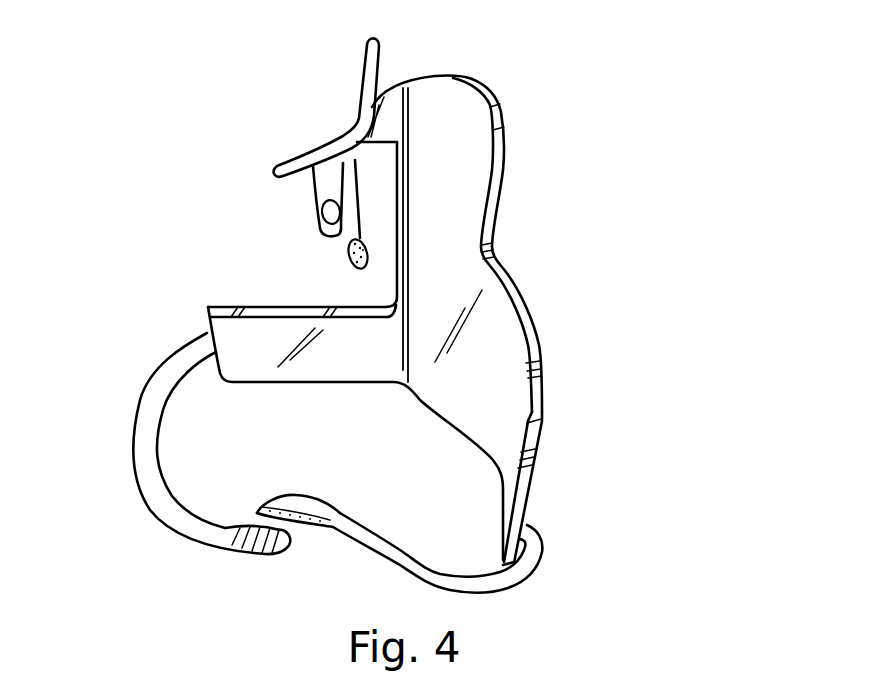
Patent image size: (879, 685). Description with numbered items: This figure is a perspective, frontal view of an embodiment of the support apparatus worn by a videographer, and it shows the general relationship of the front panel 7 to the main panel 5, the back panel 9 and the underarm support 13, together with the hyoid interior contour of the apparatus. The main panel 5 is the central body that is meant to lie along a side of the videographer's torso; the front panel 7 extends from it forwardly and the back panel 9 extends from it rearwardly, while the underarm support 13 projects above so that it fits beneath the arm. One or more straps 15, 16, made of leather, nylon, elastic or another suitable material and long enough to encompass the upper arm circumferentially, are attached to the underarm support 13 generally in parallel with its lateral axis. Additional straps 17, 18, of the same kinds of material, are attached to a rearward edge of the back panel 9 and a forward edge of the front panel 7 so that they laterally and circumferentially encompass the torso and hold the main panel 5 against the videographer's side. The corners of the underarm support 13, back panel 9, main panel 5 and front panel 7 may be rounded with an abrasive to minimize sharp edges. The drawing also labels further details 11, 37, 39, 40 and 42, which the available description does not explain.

The main panel 5 is at (450, 197).
The front panel 7 is at (333, 360).
The back panel 9 is at (533, 487).
The upper portion 11 is at (374, 102).
The underarm support 13 is at (293, 157).
The strap 15 is at (319, 224).
The strap 16 is at (350, 250).
The strap 17 is at (380, 523).
The strap 18 is at (138, 477).
The tip 37 is at (282, 531).
The pad 39 is at (258, 506).
The opening 40 is at (322, 210).
The pin end 42 is at (357, 269).